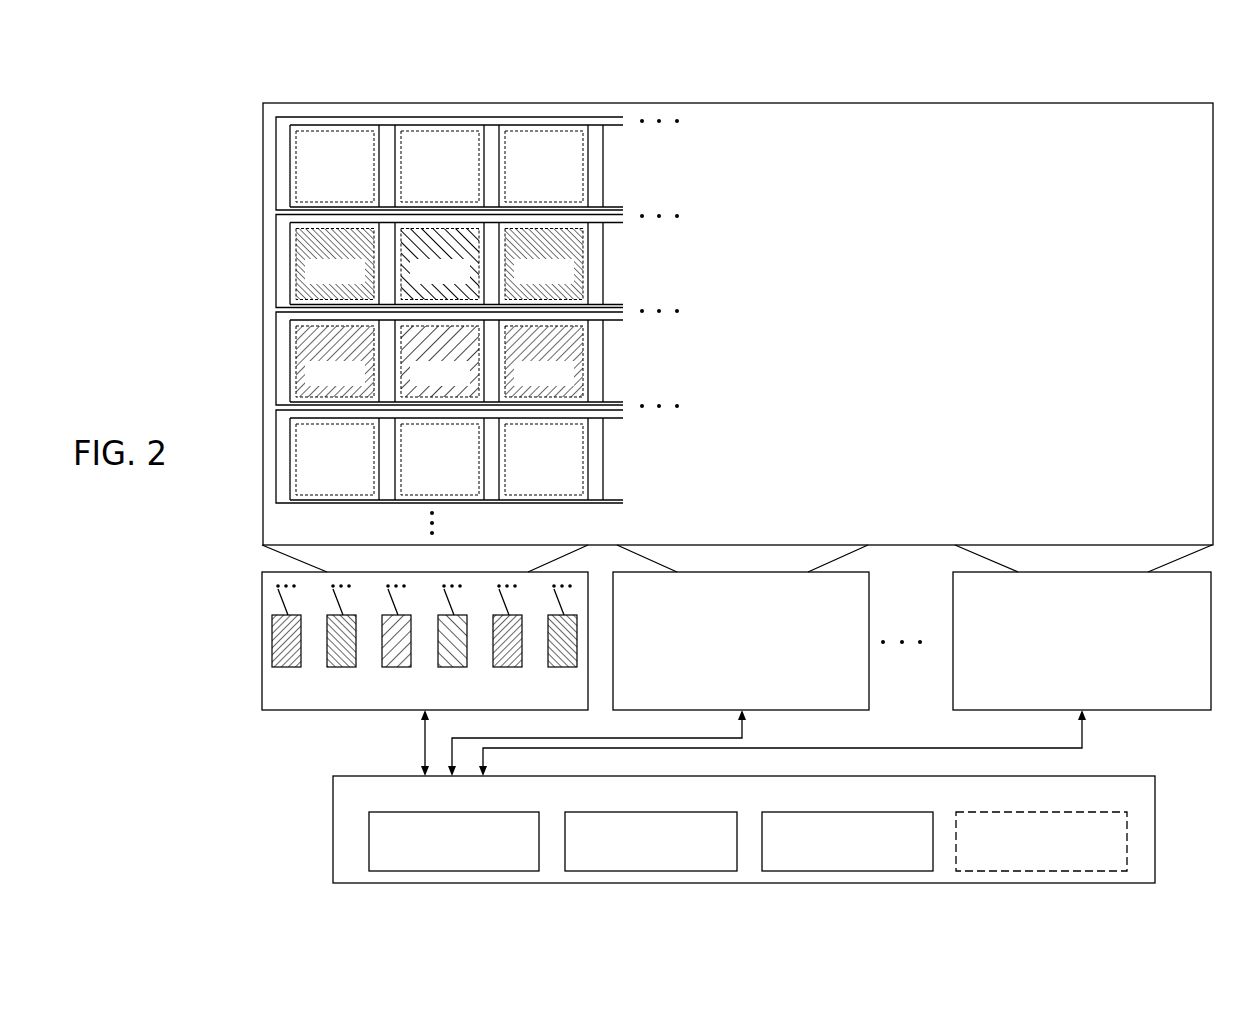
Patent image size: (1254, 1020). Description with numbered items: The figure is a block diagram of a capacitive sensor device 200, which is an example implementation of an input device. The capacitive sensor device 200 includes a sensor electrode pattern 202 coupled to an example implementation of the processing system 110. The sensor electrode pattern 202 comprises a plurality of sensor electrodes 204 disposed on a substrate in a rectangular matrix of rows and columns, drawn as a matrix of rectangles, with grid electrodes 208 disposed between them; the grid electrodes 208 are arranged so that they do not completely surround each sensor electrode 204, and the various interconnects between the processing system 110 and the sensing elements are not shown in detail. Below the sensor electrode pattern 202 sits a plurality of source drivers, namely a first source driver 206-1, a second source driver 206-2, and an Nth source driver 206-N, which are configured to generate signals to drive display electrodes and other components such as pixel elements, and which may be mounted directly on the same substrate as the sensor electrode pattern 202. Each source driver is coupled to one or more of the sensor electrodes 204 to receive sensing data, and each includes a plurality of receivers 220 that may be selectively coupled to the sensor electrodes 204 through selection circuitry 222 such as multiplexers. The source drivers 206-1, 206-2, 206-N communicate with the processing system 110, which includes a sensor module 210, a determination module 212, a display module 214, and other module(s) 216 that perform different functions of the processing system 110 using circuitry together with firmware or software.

The capacitive sensor device 200 is at (333, 102).
The sensor electrode pattern 202 is at (286, 116).
The sensor electrodes 204 is at (570, 484).
The grid electrodes 208 is at (277, 233).
The first source driver 206-1 is at (425, 641).
The second source driver 206-2 is at (741, 641).
The Nth source driver 206-N is at (1082, 641).
The receivers 220 is at (272, 637).
The selection circuitry 222 is at (272, 598).
The processing system 110 is at (605, 805).
The sensor module 210 is at (507, 862).
The determination module 212 is at (704, 862).
The display module 214 is at (901, 862).
The other module(s) 216 is at (1119, 862).